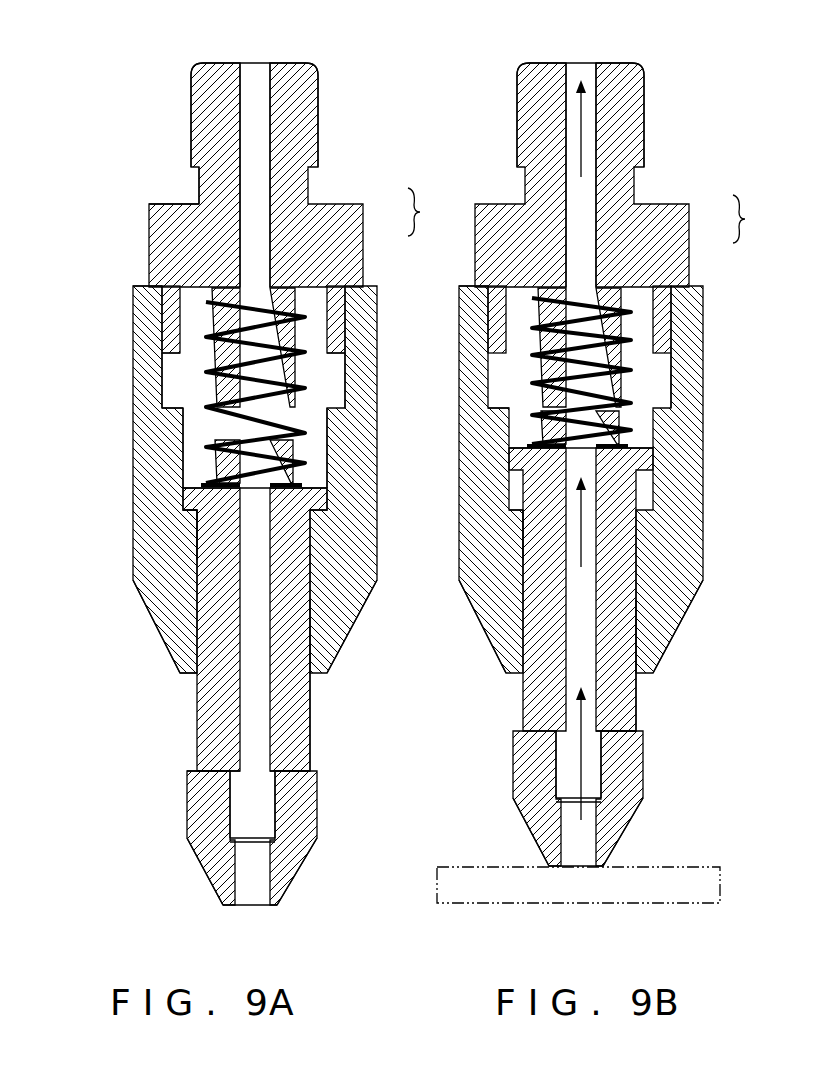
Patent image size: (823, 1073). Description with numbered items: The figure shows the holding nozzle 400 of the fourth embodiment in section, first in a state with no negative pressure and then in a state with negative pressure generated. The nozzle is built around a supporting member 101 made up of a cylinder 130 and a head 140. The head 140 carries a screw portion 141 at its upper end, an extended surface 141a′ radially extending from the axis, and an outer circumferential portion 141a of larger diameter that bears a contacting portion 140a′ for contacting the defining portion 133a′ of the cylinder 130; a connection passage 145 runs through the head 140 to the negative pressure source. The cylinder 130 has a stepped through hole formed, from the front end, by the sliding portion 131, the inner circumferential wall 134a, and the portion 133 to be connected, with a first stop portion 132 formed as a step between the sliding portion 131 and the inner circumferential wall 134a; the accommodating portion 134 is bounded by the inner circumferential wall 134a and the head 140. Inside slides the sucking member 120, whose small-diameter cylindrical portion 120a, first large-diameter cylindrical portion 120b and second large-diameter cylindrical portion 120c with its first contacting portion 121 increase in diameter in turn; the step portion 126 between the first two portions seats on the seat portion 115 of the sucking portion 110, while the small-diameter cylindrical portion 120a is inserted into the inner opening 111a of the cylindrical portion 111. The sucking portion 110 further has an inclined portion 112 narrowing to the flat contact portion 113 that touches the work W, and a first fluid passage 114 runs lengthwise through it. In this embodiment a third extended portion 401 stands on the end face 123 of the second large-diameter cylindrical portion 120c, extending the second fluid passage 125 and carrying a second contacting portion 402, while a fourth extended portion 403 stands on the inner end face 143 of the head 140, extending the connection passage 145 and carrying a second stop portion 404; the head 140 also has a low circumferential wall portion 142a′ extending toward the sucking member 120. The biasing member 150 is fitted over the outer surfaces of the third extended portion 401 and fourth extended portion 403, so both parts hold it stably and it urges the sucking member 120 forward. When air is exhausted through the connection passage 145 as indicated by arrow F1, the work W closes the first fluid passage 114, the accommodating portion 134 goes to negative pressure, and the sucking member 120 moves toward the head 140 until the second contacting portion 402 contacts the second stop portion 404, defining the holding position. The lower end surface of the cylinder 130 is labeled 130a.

In FIG. 9A, the holding nozzle 400 is at (242, 487).
In FIG. 9B, the holding nozzle 400 is at (601, 480).
In FIG. 9A, the supporting member 101 is at (242, 366).
In FIG. 9B, the supporting member 101 is at (604, 352).
In FIG. 9A, the head 140 is at (248, 195).
In FIG. 9B, the head 140 is at (596, 159).
In FIG. 9A, the screw portion 141 is at (191, 112).
In FIG. 9B, the screw portion 141 is at (518, 108).
In FIG. 9A, the outer circumferential portion 141a is at (155, 208).
In FIG. 9A, the extended surface 141a′ is at (199, 195).
In FIG. 9A, the connection passage 145 is at (254, 80).
In FIG. 9B, the connection passage 145 is at (580, 78).
In FIG. 9A, the contacting portion 140a′ is at (355, 345).
In FIG. 9A, the cylinder 130 is at (223, 452).
In FIG. 9B, the cylinder 130 is at (591, 444).
In FIG. 9A, the biasing member 150 is at (133, 294).
In FIG. 9B, the biasing member 150 is at (460, 292).
In FIG. 9A, the portion to be connected 133 is at (168, 322).
In FIG. 9B, the portion to be connected 133 is at (494, 320).
In FIG. 9A, the defining portion 133a′ is at (150, 290).
In FIG. 9A, the circumferential wall portion 142a′ is at (176, 334).
In FIG. 9A, the inner end face 143 is at (362, 385).
In FIG. 9B, the inner end face 143 is at (690, 300).
In FIG. 9A, the accommodating portion 134 is at (190, 445).
In FIG. 9A, the inner circumferential wall 134a is at (322, 442).
In FIG. 9A, the end face 123 is at (205, 470).
In FIG. 9B, the end face 123 is at (520, 445).
In FIG. 9A, the first stop portion 132 is at (190, 505).
In FIG. 9B, the first stop portion 132 is at (513, 500).
In FIG. 9A, the sliding portion 131 is at (200, 540).
In FIG. 9B, the sliding portion 131 is at (530, 540).
In FIG. 9A, the second fluid passage 125 is at (245, 640).
In FIG. 9B, the second fluid passage 125 is at (575, 635).
In FIG. 9A, the lower end surface of housing 130a is at (185, 675).
In FIG. 9A, the first contacting portion 121 is at (376, 525).
In FIG. 9B, the first contacting portion 121 is at (703, 525).
In FIG. 9A, the sucking member 120 is at (283, 646).
In FIG. 9B, the sucking member 120 is at (615, 604).
In FIG. 9A, the second large-diameter cylindrical portion 120c is at (322, 518).
In FIG. 9B, the second large-diameter cylindrical portion 120c is at (650, 470).
In FIG. 9A, the first large-diameter cylindrical portion 120b is at (310, 732).
In FIG. 9B, the first large-diameter cylindrical portion 120b is at (637, 726).
In FIG. 9A, the small-diameter cylindrical portion 120a is at (285, 790).
In FIG. 9B, the small-diameter cylindrical portion 120a is at (612, 750).
In FIG. 9A, the seat portion 115 is at (290, 765).
In FIG. 9A, the sucking portion 110 is at (238, 855).
In FIG. 9B, the sucking portion 110 is at (587, 831).
In FIG. 9A, the cylindrical portion 111 is at (300, 822).
In FIG. 9B, the cylindrical portion 111 is at (640, 786).
In FIG. 9A, the inner opening 111a is at (290, 838).
In FIG. 9A, the inclined portion 112 is at (300, 872).
In FIG. 9B, the inclined portion 112 is at (622, 832).
In FIG. 9A, the contact portion 113 is at (265, 905).
In FIG. 9B, the contact portion 113 is at (595, 868).
In FIG. 9A, the first fluid passage 114 is at (235, 885).
In FIG. 9B, the first fluid passage 114 is at (565, 840).
In FIG. 9A, the step portion 126 is at (195, 775).
In FIG. 9A, the fourth extended portion 403 is at (215, 352).
In FIG. 9B, the fourth extended portion 403 is at (540, 348).
In FIG. 9A, the second contacting portion 402 is at (215, 435).
In FIG. 9B, the second contacting portion 402 is at (640, 405).
In FIG. 9A, the third extended portion 401 is at (300, 484).
In FIG. 9B, the third extended portion 401 is at (640, 446).
In FIG. 9A, the second stop portion 404 is at (215, 410).
In FIG. 9B, the second stop portion 404 is at (540, 405).
In FIG. 9B, the arrow indicating air exhaust F1 is at (600, 140).
In FIG. 9B, the work W is at (455, 903).